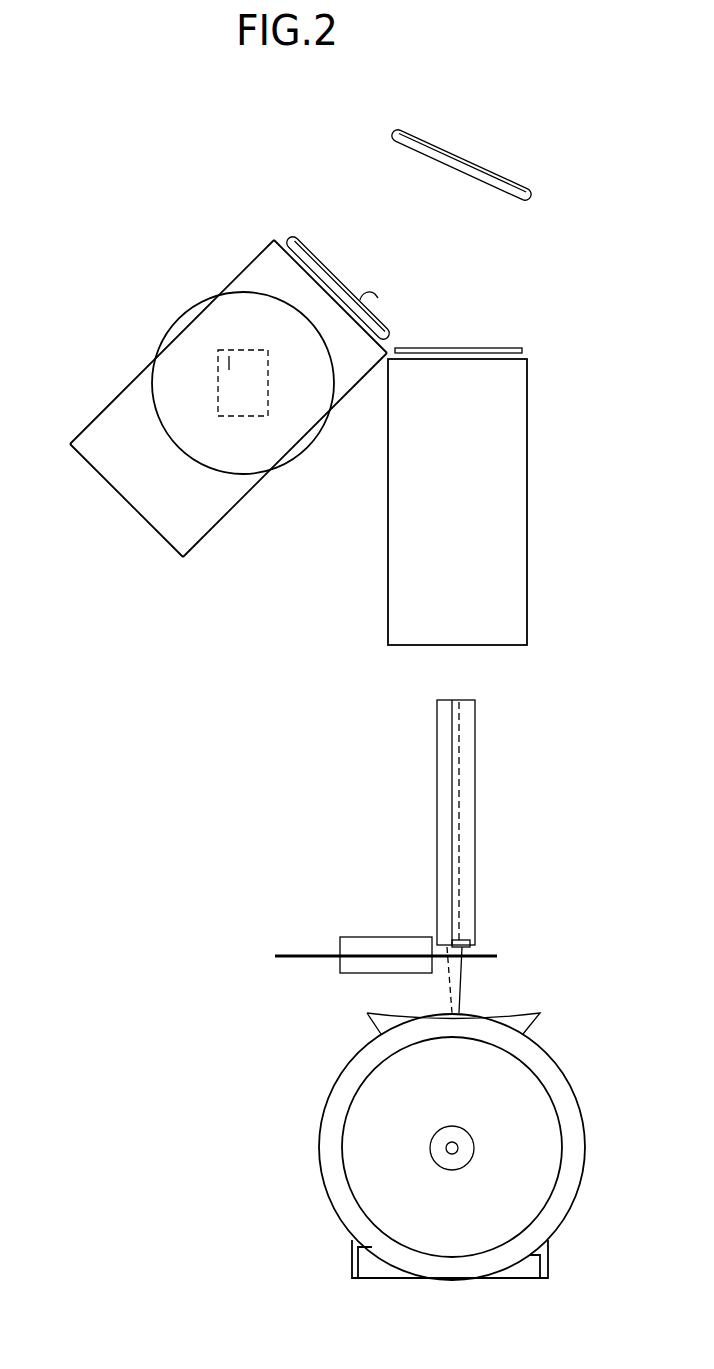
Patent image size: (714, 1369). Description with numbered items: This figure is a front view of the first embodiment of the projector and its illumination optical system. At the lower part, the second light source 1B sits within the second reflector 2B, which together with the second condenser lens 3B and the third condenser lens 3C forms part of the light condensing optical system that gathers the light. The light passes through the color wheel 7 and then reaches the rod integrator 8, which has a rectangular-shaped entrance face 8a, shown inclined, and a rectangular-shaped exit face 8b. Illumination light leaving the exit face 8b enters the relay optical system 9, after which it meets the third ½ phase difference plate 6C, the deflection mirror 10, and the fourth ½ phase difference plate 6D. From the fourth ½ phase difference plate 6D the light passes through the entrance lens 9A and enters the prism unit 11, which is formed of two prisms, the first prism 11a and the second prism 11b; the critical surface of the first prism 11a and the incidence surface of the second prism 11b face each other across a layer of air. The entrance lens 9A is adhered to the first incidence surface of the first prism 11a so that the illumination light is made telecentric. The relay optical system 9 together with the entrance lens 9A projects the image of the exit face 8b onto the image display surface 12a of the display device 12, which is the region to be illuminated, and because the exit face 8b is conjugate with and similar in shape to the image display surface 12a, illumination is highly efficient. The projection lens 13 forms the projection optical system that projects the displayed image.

The prism unit 11 is at (150, 263).
The first prism 11a is at (252, 260).
The second prism 11b is at (215, 518).
The display device 12 is at (217, 398).
The image display surface 12a is at (230, 362).
The projection lens 13 is at (165, 327).
The fourth ½ phase difference plate 6D is at (291, 235).
The entrance lens 9A is at (370, 292).
The deflection mirror 10 is at (533, 192).
The third ½ phase difference plate 6C is at (477, 348).
The relay optical system 9 is at (465, 514).
The rod integrator 8 is at (440, 820).
The entrance face 8a is at (470, 943).
The exit face 8b is at (466, 700).
The color wheel 7 is at (285, 956).
The third condenser lens 3C is at (367, 1025).
The second condenser lens 3B is at (332, 1101).
The second reflector 2B is at (467, 1232).
The second light source 1B is at (447, 1153).